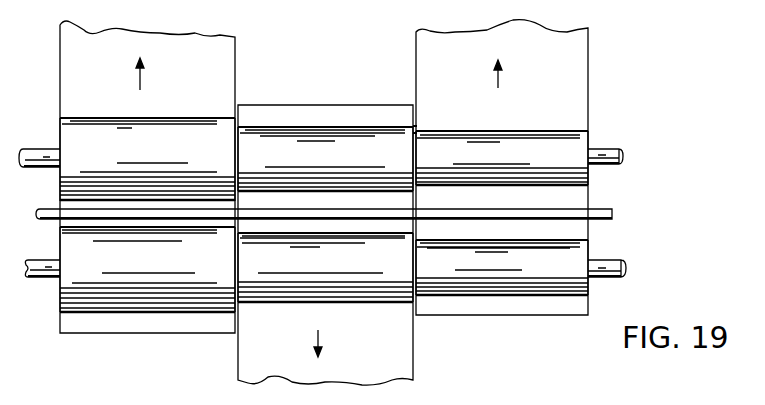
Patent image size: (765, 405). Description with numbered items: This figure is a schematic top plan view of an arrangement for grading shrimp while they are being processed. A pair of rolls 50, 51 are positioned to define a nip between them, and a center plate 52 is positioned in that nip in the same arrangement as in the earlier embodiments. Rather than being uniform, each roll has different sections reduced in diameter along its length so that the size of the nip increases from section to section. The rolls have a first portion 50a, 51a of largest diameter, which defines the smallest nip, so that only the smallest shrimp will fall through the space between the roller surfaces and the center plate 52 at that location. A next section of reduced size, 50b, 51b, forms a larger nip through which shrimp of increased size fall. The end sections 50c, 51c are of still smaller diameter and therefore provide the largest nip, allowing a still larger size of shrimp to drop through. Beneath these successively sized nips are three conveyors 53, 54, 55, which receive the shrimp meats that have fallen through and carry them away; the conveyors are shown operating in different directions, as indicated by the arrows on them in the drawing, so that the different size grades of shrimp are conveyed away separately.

The roll 50 is at (65, 137).
The first portion of roll 50a is at (244, 110).
The next section of reduced size 50b is at (415, 128).
The end section of roll 50c is at (578, 144).
The roll 51 is at (73, 248).
The first portion of roll 51a is at (208, 312).
The next section of reduced size 51b is at (374, 293).
The end section of roll 51c is at (528, 288).
The center plate 52 is at (613, 212).
The conveyor 53 is at (224, 55).
The conveyor 54 is at (360, 113).
The conveyor 55 is at (578, 68).